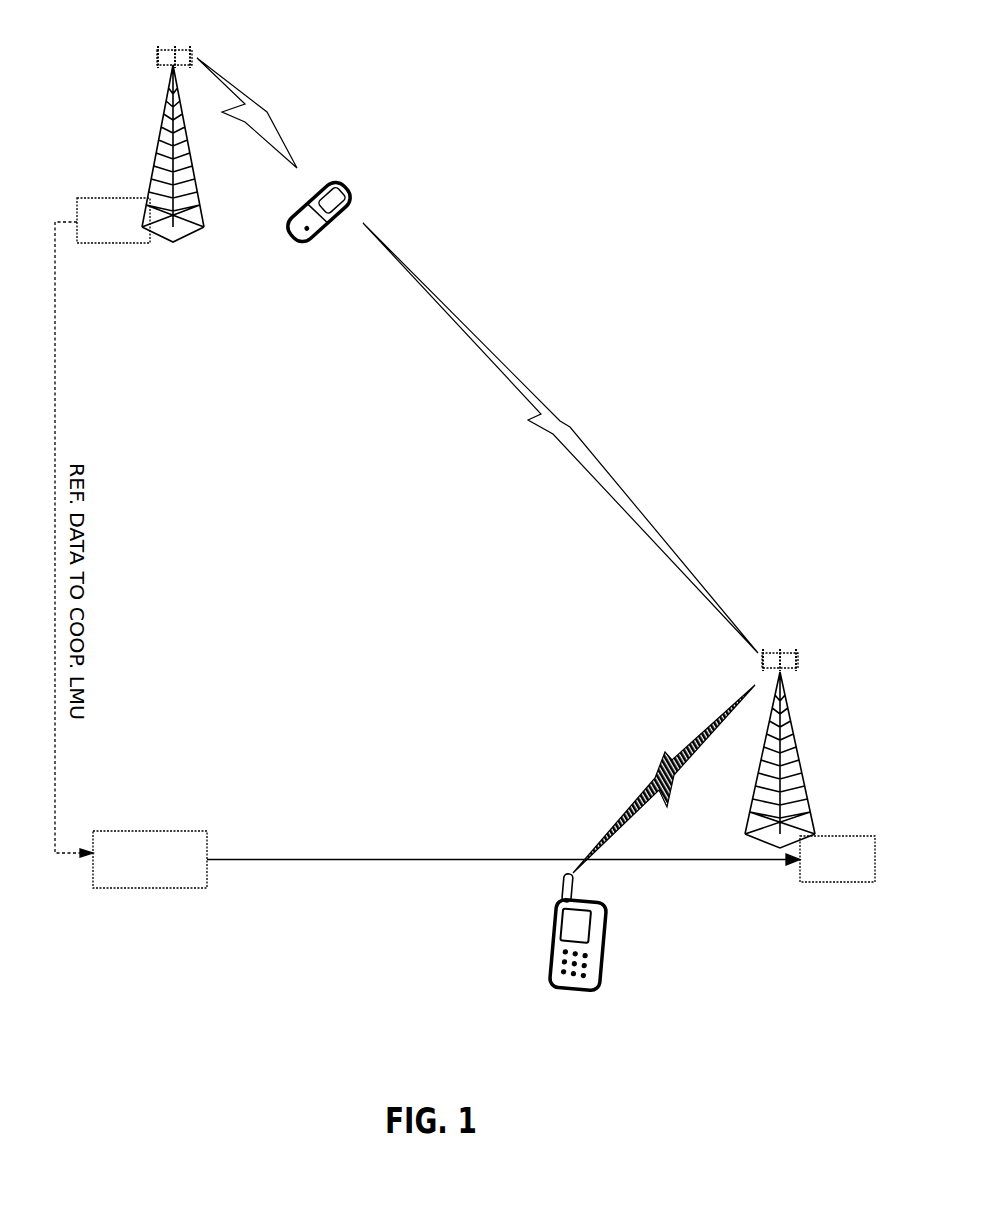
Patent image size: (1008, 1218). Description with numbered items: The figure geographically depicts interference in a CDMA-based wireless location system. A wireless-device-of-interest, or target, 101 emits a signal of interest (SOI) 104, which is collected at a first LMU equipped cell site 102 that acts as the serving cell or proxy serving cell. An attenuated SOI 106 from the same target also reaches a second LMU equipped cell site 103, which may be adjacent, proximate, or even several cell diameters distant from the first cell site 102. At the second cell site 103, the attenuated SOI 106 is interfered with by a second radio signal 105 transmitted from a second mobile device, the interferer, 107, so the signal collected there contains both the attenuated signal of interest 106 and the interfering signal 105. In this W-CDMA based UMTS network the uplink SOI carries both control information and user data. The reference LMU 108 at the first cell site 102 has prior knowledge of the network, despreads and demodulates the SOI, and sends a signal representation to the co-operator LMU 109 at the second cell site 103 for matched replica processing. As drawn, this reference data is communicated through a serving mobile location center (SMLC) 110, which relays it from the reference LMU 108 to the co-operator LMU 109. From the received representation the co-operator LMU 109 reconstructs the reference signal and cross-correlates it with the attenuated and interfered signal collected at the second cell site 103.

The wireless-device-of-interest 101 is at (319, 230).
The first LMU equipped cell site 102 is at (173, 123).
The second LMU equipped cell site 103 is at (780, 732).
The signal of interest 104 is at (252, 113).
The second radio signal 105 is at (662, 778).
The attenuated SOI 106 is at (565, 438).
The second mobile device 107 is at (589, 963).
The reference LMU 108 is at (115, 258).
The co-operator LMU 109 is at (846, 892).
The serving mobile location center 110 is at (150, 880).